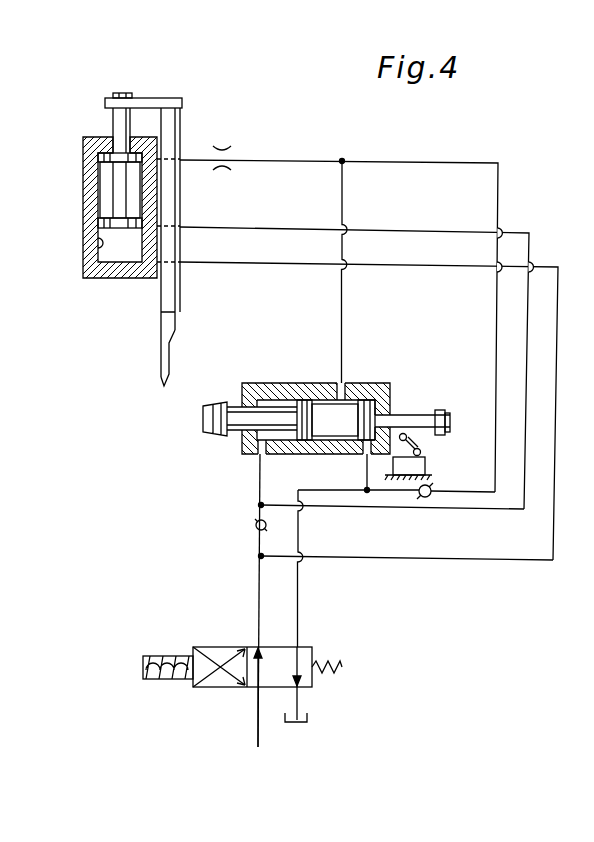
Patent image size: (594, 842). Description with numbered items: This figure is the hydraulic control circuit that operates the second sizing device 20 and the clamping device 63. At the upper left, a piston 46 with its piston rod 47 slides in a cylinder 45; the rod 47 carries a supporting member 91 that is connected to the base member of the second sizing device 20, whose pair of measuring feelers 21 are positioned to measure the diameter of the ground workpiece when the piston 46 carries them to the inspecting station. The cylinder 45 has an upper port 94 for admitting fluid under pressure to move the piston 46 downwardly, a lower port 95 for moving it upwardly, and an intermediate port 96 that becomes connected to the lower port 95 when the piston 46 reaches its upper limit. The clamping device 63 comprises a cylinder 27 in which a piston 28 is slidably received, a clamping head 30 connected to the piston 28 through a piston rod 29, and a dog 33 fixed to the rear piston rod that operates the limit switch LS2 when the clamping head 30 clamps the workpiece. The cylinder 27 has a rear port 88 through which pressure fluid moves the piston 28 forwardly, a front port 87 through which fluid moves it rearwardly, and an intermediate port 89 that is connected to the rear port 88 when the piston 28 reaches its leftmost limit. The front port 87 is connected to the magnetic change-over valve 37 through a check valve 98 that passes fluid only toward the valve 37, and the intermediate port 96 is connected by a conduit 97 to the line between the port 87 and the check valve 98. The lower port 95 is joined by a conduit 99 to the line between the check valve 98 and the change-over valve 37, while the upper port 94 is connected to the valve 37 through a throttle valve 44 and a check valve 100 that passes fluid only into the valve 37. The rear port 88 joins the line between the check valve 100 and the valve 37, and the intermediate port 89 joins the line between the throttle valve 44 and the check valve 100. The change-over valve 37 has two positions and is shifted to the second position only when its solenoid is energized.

The supporting member 91 is at (183, 104).
The piston rod 47 is at (118, 120).
The upper port 94 is at (158, 159).
The throttle valve 44 is at (225, 148).
The piston 46 is at (110, 190).
The intermediate port 96 is at (157, 226).
The conduit 97 is at (380, 230).
The cylinder 45 is at (100, 250).
The lower port 95 is at (143, 278).
The second sizing device 20 is at (173, 298).
The measuring feelers 21 is at (168, 365).
The piston rod 29 is at (268, 408).
The cylinder 27 is at (300, 392).
The intermediate port 89 is at (345, 384).
The clamping device 63 is at (321, 546).
The dog 33 is at (446, 410).
The limit switch LS2 is at (428, 462).
The check valve 100 is at (432, 488).
The clamping head 30 is at (208, 430).
The front port 87 is at (262, 452).
The piston 28 is at (320, 445).
The rear port 88 is at (366, 456).
The check valve 98 is at (256, 528).
The conduit 99 is at (452, 560).
The magnetic change-over valve 37 is at (312, 645).